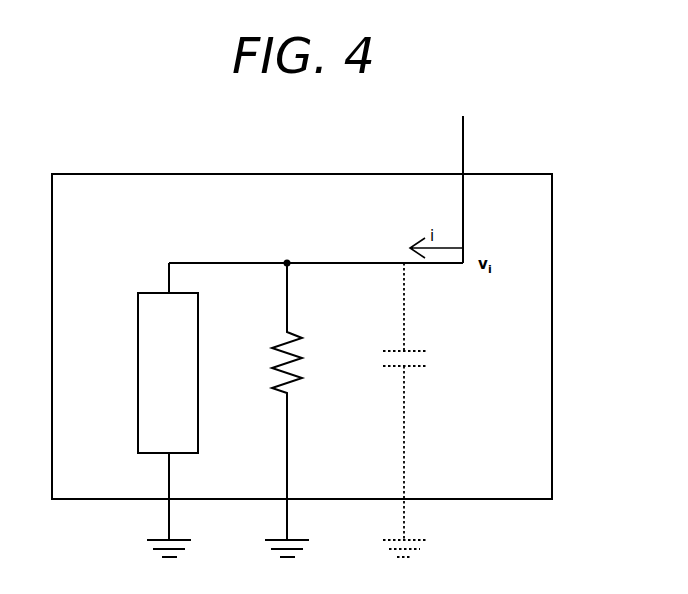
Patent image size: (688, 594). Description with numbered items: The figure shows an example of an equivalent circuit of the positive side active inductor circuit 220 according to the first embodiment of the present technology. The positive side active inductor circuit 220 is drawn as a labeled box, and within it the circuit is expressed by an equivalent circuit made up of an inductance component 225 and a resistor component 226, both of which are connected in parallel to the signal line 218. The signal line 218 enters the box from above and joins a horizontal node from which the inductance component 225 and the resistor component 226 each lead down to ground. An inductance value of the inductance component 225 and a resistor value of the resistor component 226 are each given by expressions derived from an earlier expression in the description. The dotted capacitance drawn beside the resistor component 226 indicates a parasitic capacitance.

The signal line 218 is at (461, 177).
The positive side active inductor circuit 220 is at (574, 190).
The inductance component 225 is at (199, 318).
The resistor component 226 is at (326, 382).